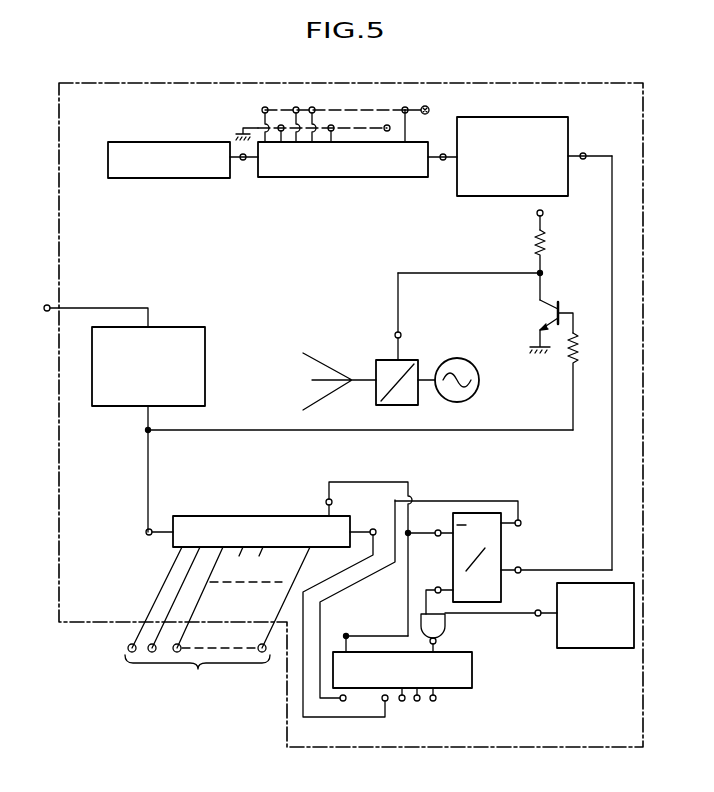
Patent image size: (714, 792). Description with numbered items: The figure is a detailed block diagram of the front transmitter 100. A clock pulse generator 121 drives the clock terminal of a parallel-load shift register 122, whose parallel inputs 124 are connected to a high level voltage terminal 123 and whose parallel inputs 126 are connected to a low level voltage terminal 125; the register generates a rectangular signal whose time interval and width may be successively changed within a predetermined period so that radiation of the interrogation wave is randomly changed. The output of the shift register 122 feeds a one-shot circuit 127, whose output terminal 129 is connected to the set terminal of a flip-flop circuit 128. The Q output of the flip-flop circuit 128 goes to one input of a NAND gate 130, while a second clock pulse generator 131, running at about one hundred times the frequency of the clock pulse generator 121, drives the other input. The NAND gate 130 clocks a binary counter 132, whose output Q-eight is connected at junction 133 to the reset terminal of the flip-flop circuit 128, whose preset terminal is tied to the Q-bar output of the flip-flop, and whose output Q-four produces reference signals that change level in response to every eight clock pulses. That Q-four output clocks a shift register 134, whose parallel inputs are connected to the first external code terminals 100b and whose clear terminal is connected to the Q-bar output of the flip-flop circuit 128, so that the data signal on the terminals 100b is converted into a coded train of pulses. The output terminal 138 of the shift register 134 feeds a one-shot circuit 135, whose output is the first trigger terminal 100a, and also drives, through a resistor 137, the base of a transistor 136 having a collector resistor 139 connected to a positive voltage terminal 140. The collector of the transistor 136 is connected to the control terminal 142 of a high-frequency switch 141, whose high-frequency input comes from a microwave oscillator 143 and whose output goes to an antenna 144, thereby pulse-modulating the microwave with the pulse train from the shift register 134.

The front transmitter 100 is at (287, 690).
The first trigger terminal 100a is at (44, 308).
The first external code terminals 100b is at (217, 616).
The clock pulse generator 121 is at (212, 142).
The parallel-load shift register 122 is at (320, 177).
The high level voltage terminal 123 is at (428, 108).
The parallel inputs 124 is at (264, 108).
The low level voltage terminal 125 is at (243, 128).
The parallel inputs 126 is at (281, 125).
The one-shot circuit 127 is at (528, 117).
The flip-flop circuit 128 is at (501, 535).
The output terminal 129 is at (590, 147).
The NAND gate 130 is at (446, 630).
The clock pulse generator 131 is at (593, 648).
The binary counter 132 is at (475, 664).
The junction 133 is at (344, 703).
The shift register 134 is at (258, 516).
The one-shot circuit 135 is at (191, 327).
The transistor 136 is at (540, 314).
The resistor 137 is at (570, 355).
The output terminal 138 is at (146, 532).
The collector resistor 139 is at (546, 242).
The positive voltage terminal 140 is at (543, 213).
The high-frequency switch 141 is at (376, 365).
The control terminal 142 is at (395, 336).
The microwave oscillator 143 is at (458, 358).
The antenna 144 is at (323, 362).